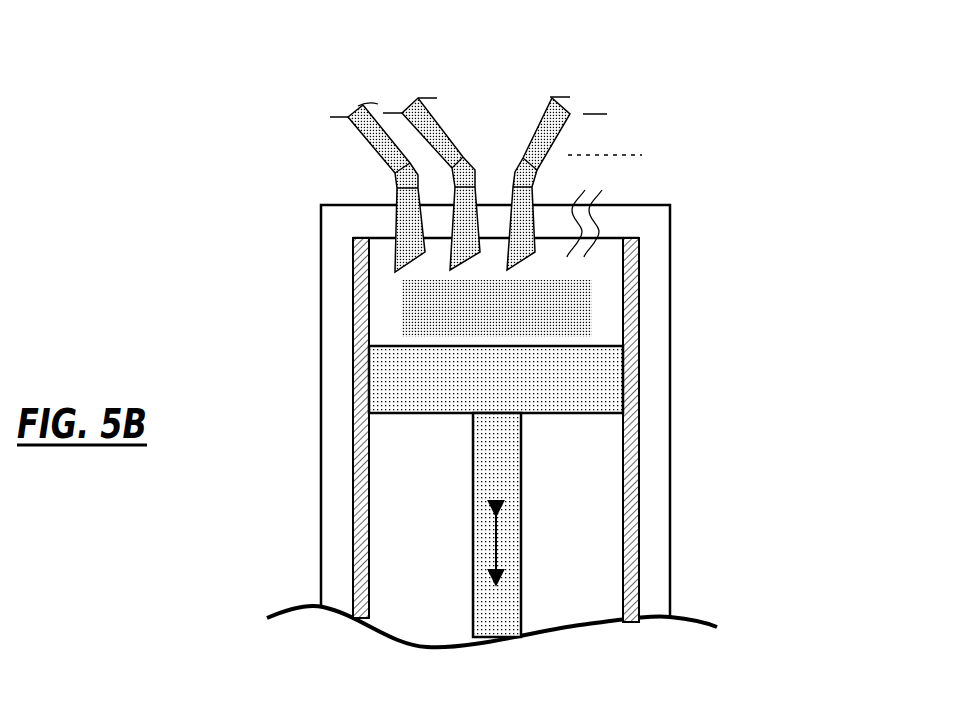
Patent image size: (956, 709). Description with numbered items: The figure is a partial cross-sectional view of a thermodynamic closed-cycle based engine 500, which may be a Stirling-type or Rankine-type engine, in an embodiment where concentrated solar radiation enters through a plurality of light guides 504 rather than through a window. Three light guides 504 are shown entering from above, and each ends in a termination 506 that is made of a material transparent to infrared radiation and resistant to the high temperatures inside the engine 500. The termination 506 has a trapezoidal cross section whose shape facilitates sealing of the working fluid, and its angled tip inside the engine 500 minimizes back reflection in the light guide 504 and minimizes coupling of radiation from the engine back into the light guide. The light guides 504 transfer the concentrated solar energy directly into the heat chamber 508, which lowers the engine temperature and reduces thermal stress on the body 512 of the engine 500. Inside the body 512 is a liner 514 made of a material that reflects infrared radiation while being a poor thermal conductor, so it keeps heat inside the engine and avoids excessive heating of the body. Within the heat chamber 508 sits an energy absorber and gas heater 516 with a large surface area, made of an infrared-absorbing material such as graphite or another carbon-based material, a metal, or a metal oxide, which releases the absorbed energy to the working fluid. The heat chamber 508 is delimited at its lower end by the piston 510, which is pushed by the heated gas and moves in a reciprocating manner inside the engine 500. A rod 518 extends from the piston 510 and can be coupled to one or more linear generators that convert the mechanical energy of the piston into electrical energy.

The thermodynamic closed-cycle based engine 500 is at (720, 107).
The light guides 504 is at (458, 98).
The termination 506 is at (397, 220).
The heat chamber 508 is at (600, 267).
The piston 510 is at (590, 395).
The body 512 is at (672, 455).
The liner 514 is at (639, 558).
The energy absorber and gas heater 516 is at (537, 315).
The rod 518 is at (498, 625).